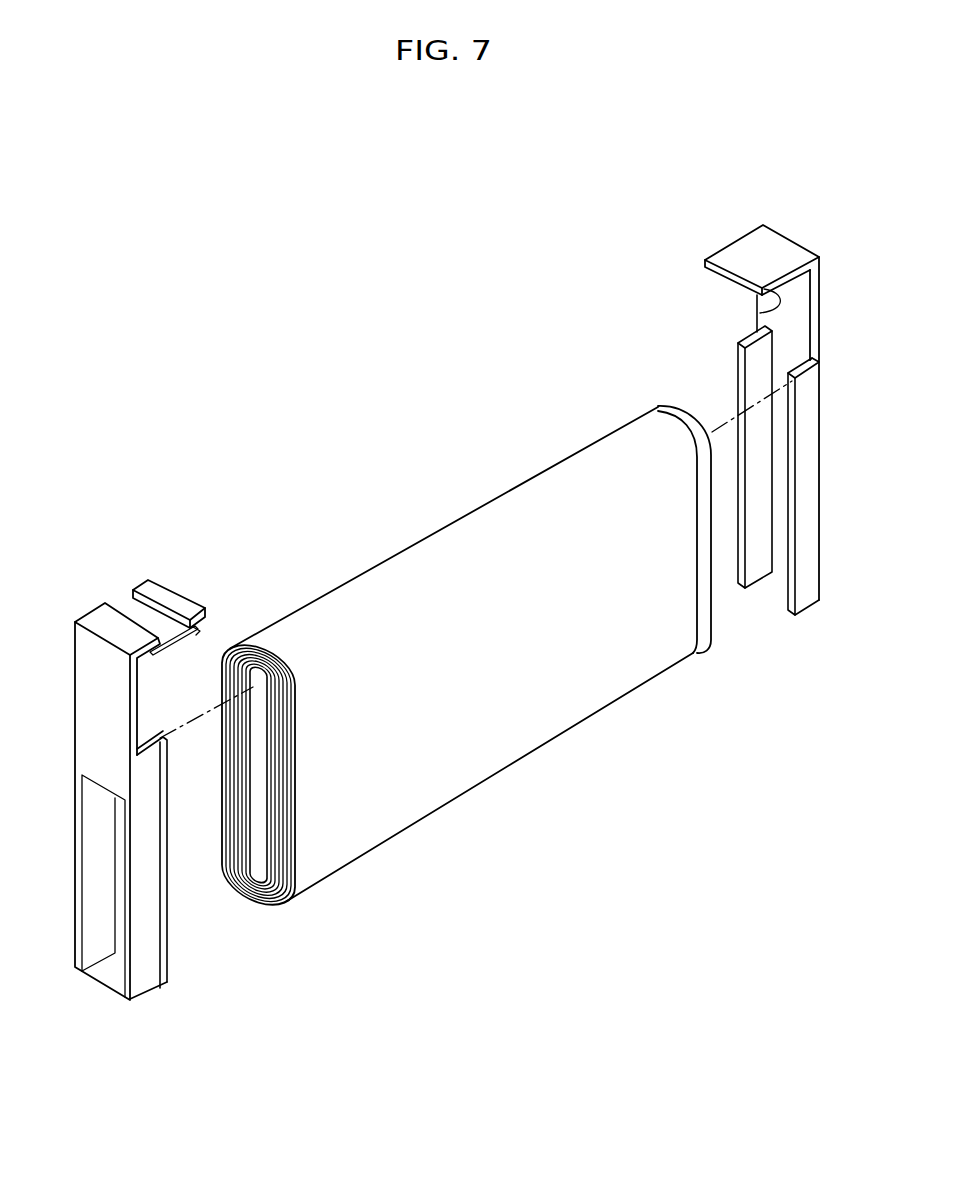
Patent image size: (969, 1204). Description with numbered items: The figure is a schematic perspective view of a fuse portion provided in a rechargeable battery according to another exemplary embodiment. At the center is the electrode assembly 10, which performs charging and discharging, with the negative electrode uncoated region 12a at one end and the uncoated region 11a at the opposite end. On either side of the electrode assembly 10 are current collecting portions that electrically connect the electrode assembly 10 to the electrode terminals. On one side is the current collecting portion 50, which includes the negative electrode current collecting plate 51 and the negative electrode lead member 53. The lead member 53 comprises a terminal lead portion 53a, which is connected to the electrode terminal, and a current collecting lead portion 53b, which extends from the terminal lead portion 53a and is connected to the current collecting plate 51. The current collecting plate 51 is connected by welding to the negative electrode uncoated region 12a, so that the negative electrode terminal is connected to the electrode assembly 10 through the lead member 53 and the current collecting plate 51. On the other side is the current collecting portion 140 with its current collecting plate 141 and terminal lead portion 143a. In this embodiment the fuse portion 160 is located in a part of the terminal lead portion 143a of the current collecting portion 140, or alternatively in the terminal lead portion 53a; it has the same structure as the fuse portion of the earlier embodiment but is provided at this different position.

The electrode assembly 10 is at (455, 498).
The first electrode tab (jelly roll end) 11a is at (295, 887).
The negative electrode uncoated region 12a is at (705, 637).
The current collecting portion 50 is at (683, 248).
The negative electrode current collecting plate 51 is at (812, 615).
The negative electrode lead member 53 is at (635, 268).
The terminal lead portion 53a is at (757, 300).
The current collecting lead portion 53b is at (818, 318).
The current collecting portion 140 is at (201, 552).
The support plate of first holder 141 is at (162, 935).
The terminal lead portion 143a is at (152, 657).
The fuse portion 160 is at (119, 586).